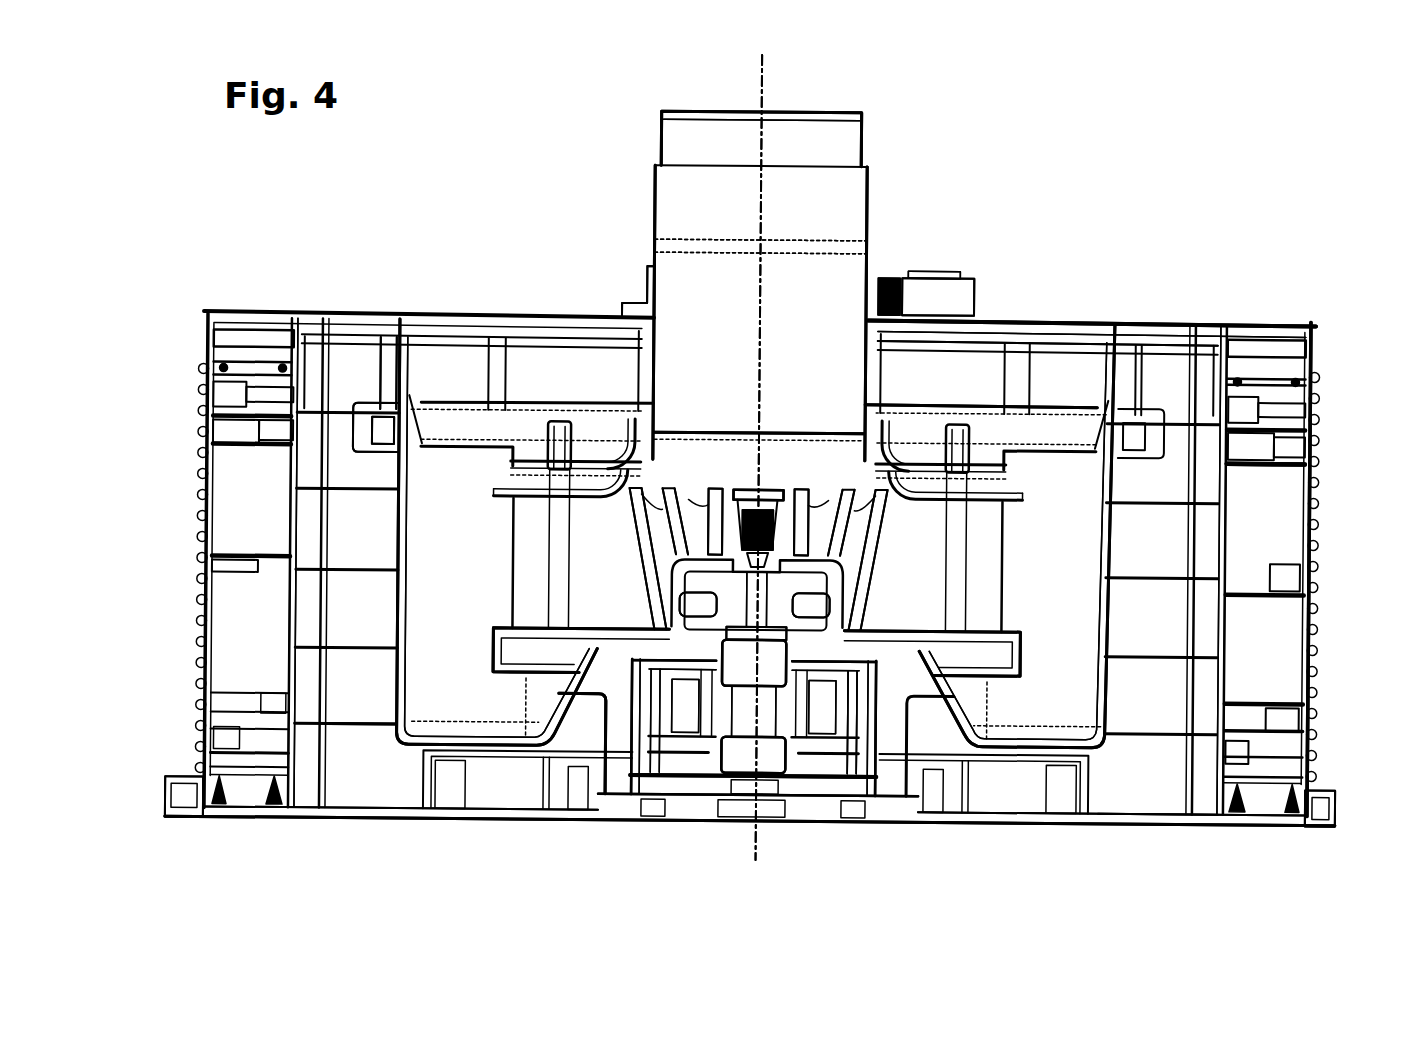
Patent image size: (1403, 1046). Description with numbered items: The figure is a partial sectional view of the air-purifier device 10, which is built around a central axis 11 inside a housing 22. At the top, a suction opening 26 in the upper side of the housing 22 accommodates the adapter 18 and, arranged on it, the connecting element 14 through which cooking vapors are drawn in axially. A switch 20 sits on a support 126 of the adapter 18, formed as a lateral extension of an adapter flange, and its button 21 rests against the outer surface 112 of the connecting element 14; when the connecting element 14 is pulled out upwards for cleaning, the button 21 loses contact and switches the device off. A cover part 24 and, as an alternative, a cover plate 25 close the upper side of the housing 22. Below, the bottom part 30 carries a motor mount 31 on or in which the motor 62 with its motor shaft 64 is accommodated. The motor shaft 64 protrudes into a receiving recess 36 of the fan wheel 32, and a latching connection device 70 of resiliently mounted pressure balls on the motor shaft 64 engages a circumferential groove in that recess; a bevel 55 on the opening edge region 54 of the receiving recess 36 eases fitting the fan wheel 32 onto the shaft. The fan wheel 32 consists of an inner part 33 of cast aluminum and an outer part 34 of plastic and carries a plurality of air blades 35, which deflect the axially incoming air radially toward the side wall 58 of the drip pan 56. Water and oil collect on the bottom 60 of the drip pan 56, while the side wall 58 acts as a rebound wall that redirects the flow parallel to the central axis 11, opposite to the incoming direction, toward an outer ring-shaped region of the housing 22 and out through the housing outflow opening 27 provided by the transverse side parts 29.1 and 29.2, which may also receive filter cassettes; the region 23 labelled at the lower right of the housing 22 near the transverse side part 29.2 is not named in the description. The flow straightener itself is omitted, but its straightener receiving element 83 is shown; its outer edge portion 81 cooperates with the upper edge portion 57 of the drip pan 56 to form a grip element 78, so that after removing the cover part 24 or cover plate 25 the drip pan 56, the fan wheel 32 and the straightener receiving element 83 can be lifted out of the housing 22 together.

The air-purifier device 10 is at (1205, 90).
The central axis 11 is at (770, 64).
The outer surface 112 is at (645, 204).
The connecting element 14 is at (905, 192).
The adapter 18 is at (628, 290).
The switch 20 is at (950, 292).
The button 21 is at (886, 300).
The support 126 is at (990, 313).
The suction opening 26 is at (800, 455).
The cover plate 25 is at (1160, 325).
The cover part 24 is at (1205, 333).
The housing 22 is at (1340, 292).
The housing outflow opening 27 is at (1250, 490).
The transverse side part 29.2 is at (1283, 550).
The transverse side part 29.1 is at (233, 627).
The side wall 58 is at (1107, 693).
The outer edge portion 81 is at (340, 432).
The upper edge portion 57 is at (357, 463).
The drip pan 56 is at (393, 700).
The grip element 78 is at (357, 396).
The straightener receiving element 83 is at (398, 390).
The air blades 35 is at (612, 553).
The outer part 34 is at (547, 630).
The fan wheel 32 is at (443, 790).
The inner part 33 is at (585, 700).
The motor 62 is at (640, 640).
The motor shaft 64 is at (687, 640).
The receiving recess 36 is at (730, 775).
The latching connection device 70 is at (800, 640).
The motor mount 31 is at (880, 725).
The opening edge region 54 is at (858, 748).
The bevel 55 is at (852, 722).
The bottom 60 is at (1017, 690).
The bottom part 30 is at (1087, 775).
The outlet opening 23 is at (1153, 773).